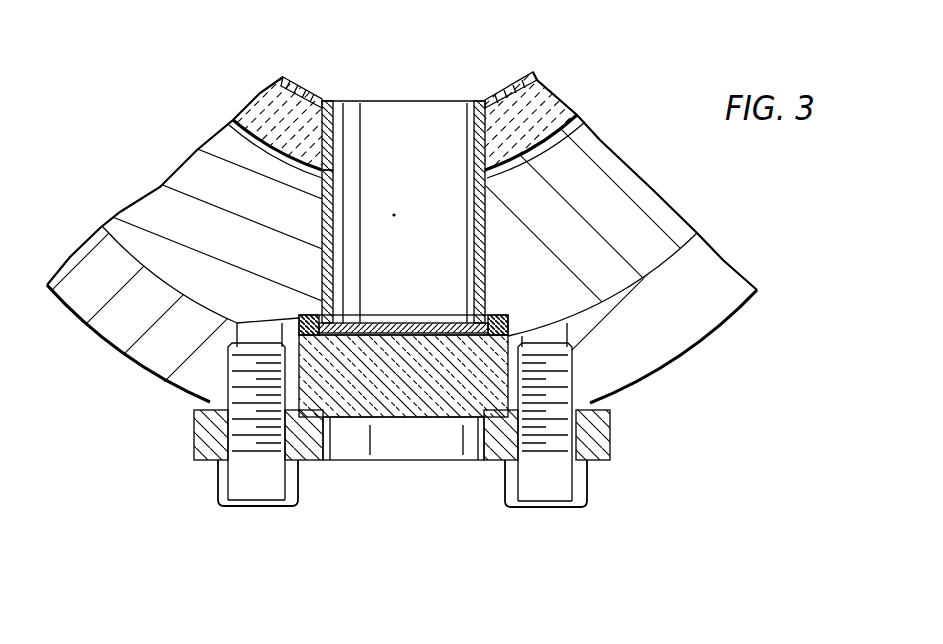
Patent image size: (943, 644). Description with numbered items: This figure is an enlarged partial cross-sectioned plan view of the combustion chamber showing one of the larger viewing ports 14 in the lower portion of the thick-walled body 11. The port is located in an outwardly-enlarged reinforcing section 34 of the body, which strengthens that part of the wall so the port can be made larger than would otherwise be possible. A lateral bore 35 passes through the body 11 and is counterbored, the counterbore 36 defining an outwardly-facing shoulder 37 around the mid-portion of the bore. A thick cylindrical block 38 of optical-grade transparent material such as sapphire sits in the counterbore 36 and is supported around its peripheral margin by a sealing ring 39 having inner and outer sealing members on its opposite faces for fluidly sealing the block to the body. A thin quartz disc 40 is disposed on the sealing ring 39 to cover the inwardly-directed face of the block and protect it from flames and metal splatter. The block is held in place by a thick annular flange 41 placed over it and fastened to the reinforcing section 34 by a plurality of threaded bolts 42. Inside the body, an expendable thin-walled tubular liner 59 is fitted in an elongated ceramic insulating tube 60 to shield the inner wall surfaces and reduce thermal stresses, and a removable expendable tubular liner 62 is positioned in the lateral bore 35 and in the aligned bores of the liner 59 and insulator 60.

The thick-walled body 11 is at (647, 203).
The larger viewing port 14 is at (362, 498).
The outwardly-enlarged reinforcing section 34 is at (722, 283).
The lateral bore 35 is at (322, 228).
The counterbore 36 is at (507, 381).
The outwardly-facing shoulder 37 is at (498, 312).
The thick cylindrical block 38 is at (437, 352).
The sealing ring 39 is at (237, 328).
The thin quartz disc 40 is at (370, 327).
The thick annular flange 41 is at (598, 446).
The threaded bolt 42 is at (218, 488).
The thin-walled tubular liner 59 is at (509, 84).
The ceramic insulating tube 60 is at (552, 110).
The expendable tubular liner 62 is at (327, 118).